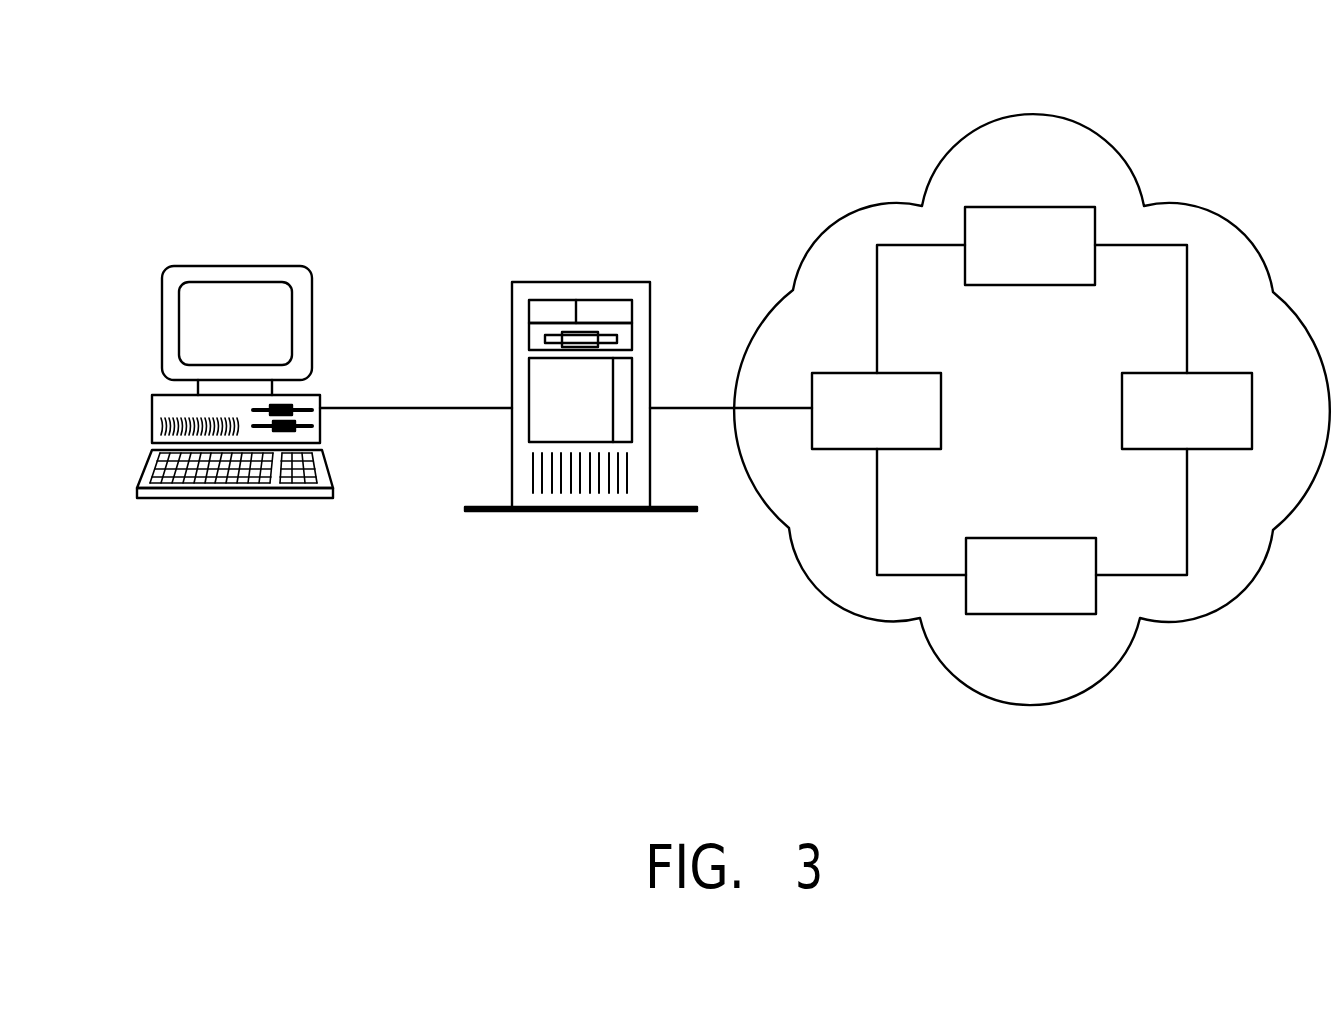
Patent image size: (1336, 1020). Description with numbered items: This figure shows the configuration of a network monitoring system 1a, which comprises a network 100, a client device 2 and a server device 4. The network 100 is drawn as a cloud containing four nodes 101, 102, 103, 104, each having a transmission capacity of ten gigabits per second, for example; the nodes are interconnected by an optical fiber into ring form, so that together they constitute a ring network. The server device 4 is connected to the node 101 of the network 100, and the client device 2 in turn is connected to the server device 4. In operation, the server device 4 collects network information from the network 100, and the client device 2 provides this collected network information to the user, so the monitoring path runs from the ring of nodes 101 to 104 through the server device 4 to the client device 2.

The network monitoring system 1a is at (403, 156).
The client device 2 is at (143, 498).
The server device 4 is at (467, 511).
The network 100 is at (1032, 440).
The node 101 is at (918, 373).
The node 102 is at (1038, 538).
The node 103 is at (1142, 373).
The node 104 is at (1012, 207).